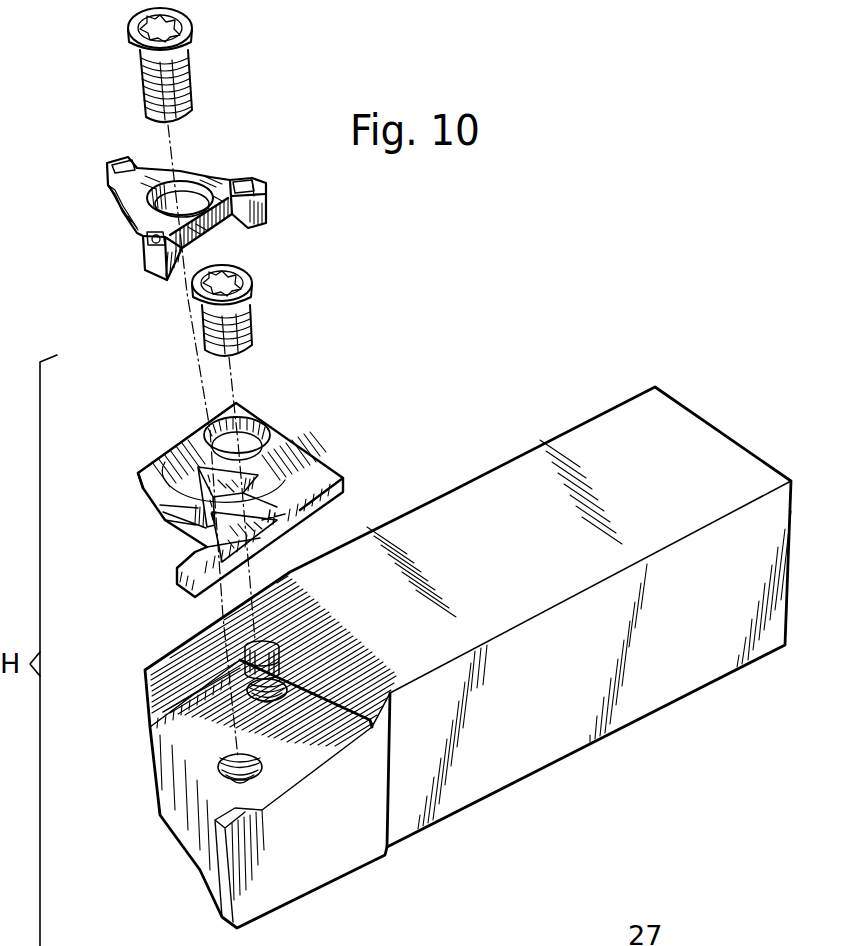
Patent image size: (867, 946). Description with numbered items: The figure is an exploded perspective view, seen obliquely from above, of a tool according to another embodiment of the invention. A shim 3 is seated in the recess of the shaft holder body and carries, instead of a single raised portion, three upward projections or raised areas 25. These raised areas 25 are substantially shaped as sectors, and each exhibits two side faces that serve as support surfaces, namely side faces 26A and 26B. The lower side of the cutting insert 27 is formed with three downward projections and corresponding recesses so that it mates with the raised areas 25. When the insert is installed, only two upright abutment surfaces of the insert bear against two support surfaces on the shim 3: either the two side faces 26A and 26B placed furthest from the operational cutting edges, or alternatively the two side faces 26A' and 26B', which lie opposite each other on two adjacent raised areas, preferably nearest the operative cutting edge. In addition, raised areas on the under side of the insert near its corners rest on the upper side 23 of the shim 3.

The cutting insert 27 is at (213, 183).
The shim 3 is at (298, 463).
The upper side of the shim 23 is at (187, 455).
The raised areas 25 is at (240, 477).
The side face 26A is at (338, 493).
The side face 26B is at (154, 465).
The side face 26A' is at (172, 573).
The side face 26B' is at (128, 545).